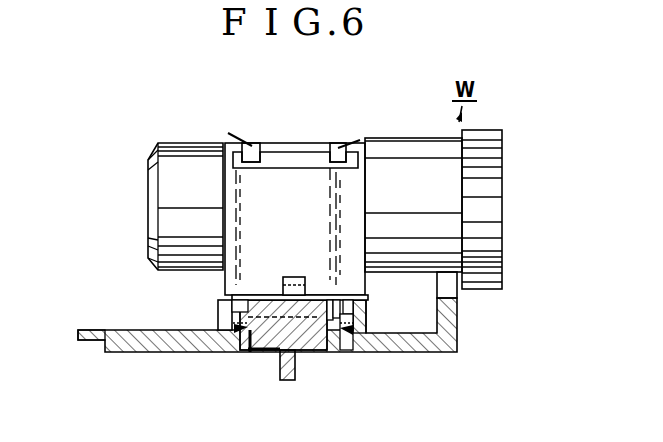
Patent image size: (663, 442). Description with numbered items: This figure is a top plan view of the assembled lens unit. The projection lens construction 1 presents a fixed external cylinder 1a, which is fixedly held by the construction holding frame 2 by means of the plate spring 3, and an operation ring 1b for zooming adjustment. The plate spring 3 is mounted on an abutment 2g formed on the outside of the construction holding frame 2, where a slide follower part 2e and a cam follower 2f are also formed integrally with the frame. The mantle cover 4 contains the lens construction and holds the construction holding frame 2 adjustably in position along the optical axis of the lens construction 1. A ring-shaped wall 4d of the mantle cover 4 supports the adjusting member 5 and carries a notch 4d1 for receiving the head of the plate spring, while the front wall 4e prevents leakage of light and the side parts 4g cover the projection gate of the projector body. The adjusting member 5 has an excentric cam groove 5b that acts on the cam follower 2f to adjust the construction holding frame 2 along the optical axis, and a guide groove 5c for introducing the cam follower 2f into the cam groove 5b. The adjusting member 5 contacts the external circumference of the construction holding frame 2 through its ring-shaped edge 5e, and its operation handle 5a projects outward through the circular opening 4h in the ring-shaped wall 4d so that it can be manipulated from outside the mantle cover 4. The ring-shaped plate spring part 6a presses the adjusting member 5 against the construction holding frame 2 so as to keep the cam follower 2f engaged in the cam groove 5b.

The projection lens construction 1 is at (421, 158).
The fixed external cylinder 1a is at (193, 155).
The operation ring 1b is at (495, 142).
The construction holding frame 2 is at (330, 178).
The slide follower part 2e is at (292, 277).
The cam follower 2f is at (328, 297).
The abutment 2g is at (249, 150).
The plate spring 3 is at (292, 152).
The mantle cover 4 is at (137, 342).
The ring-shaped wall 4d is at (376, 314).
The notch 4d1 is at (218, 320).
The front wall 4e is at (448, 290).
The side parts 4g is at (81, 341).
The circular opening 4h is at (253, 360).
The adjusting member 5 is at (317, 352).
The operation handle 5a is at (291, 382).
The excentric cam groove 5b is at (274, 302).
The guide groove 5c is at (226, 288).
The ring-shaped edge 5e is at (352, 297).
The ring-shaped plate spring part 6a is at (357, 340).